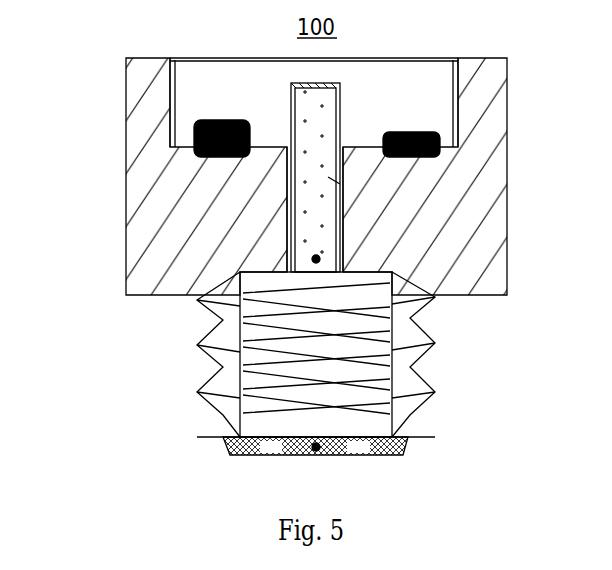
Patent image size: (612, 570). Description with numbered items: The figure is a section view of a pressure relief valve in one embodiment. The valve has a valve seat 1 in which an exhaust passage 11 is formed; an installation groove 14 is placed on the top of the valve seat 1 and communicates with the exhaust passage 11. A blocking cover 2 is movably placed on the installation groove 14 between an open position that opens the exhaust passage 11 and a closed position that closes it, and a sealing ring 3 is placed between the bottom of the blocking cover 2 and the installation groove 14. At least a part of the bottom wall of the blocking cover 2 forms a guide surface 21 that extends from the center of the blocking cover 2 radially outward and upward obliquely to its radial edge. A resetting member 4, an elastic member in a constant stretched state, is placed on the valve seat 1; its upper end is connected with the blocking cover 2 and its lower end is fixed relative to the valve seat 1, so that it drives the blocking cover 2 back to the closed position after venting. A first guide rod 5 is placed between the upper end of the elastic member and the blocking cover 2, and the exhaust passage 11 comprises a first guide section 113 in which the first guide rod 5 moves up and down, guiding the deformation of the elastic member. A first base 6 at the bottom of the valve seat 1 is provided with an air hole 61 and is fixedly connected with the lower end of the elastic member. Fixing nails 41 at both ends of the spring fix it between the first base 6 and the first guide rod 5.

The valve seat 1 is at (150, 168).
The blocking cover 2 is at (442, 83).
The sealing ring 3 is at (340, 128).
The first guide rod 5 is at (328, 177).
The installation groove 14 is at (177, 133).
The guide surface 21 is at (291, 127).
The first guide section 113 is at (287, 253).
The fixing nails 41 is at (320, 261).
The exhaust passage 11 is at (377, 340).
The resetting member 4 is at (367, 378).
The first base 6 is at (273, 453).
The air hole 61 is at (317, 433).